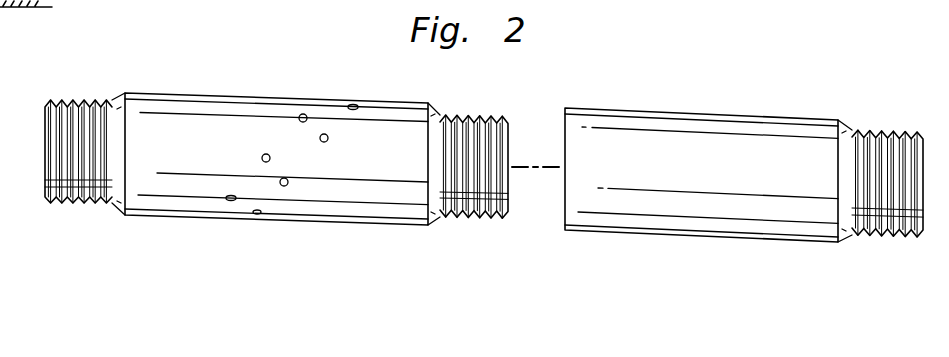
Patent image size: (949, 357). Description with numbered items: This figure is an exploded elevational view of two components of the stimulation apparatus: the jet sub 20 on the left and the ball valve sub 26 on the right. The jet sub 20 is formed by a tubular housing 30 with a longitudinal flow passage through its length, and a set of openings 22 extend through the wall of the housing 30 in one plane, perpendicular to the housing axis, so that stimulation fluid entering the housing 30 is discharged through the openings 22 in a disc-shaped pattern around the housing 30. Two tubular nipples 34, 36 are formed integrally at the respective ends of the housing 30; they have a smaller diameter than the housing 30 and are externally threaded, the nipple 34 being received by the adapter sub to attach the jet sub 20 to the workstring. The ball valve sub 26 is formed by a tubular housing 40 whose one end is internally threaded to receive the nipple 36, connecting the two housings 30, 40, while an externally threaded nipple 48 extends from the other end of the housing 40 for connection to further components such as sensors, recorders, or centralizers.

The jet sub 20 is at (282, 92).
The openings 22 is at (261, 158).
The ball valve sub 26 is at (706, 105).
The tubular housing 30 is at (193, 108).
The tubular nipple 34 is at (83, 99).
The tubular nipple 36 is at (474, 114).
The tubular housing 40 is at (800, 128).
The externally threaded nipple 48 is at (900, 129).